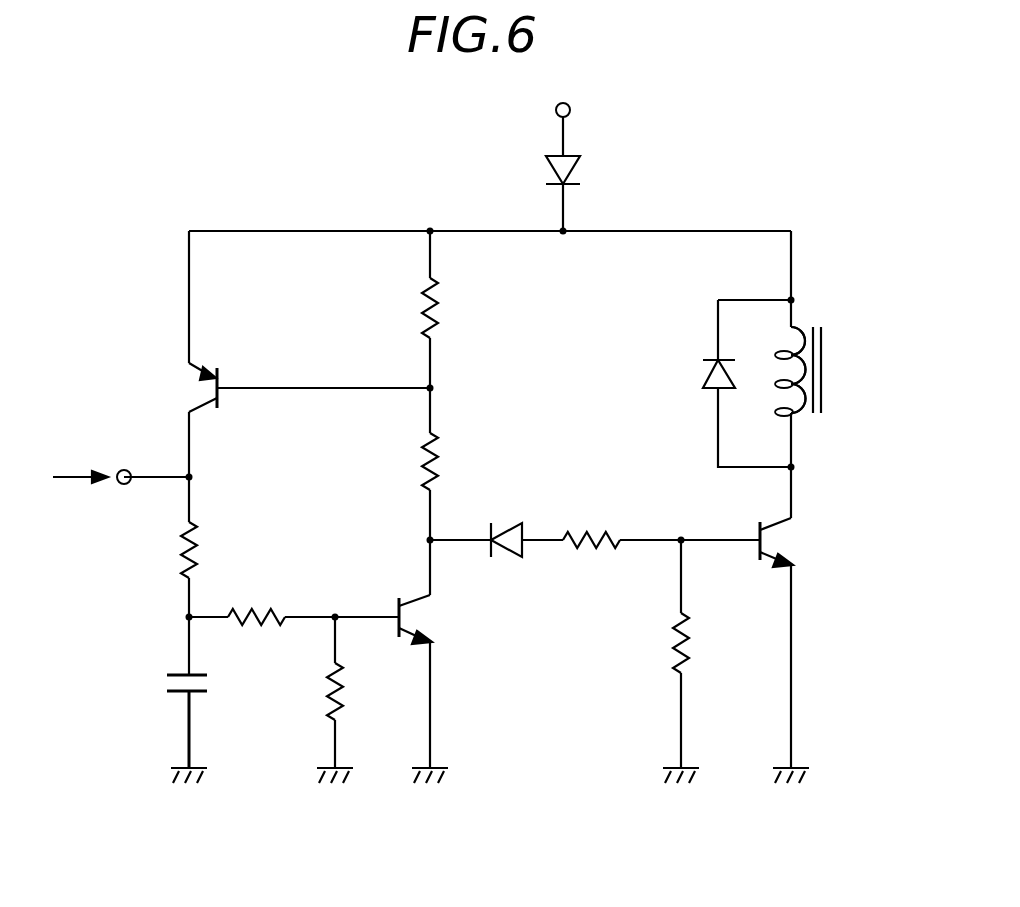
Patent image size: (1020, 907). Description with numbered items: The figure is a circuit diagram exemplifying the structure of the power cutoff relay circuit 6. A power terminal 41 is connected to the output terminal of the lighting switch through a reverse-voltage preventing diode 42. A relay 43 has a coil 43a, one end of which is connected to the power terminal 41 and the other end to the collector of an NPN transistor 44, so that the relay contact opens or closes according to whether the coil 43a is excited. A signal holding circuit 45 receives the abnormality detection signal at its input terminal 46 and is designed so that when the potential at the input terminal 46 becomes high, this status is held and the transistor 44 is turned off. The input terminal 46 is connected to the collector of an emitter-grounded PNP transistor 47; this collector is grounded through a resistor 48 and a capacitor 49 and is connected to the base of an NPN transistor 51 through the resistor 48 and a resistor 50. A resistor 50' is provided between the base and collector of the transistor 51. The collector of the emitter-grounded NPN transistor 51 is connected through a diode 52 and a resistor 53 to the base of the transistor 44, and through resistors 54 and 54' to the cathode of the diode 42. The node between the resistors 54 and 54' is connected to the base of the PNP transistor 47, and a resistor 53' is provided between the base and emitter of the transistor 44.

The power cutoff relay circuit 6 is at (386, 178).
The power terminal 41 is at (571, 104).
The reverse-voltage preventing diode 42 is at (576, 168).
The relay 43 is at (832, 358).
The coil 43a is at (797, 417).
The NPN transistor 44 is at (775, 540).
The signal holding circuit 45 is at (467, 410).
The input terminal 46 is at (124, 469).
The PNP transistor 47 is at (196, 392).
The resistor 48 is at (197, 540).
The capacitor 49 is at (172, 672).
The resistor 50 is at (278, 590).
The resistor 50' is at (300, 693).
The NPN transistor 51 is at (418, 617).
The diode 52 is at (510, 525).
The resistor 53 is at (598, 507).
The resistor 53' is at (643, 643).
The resistor 54 is at (386, 460).
The resistor 54' is at (391, 308).